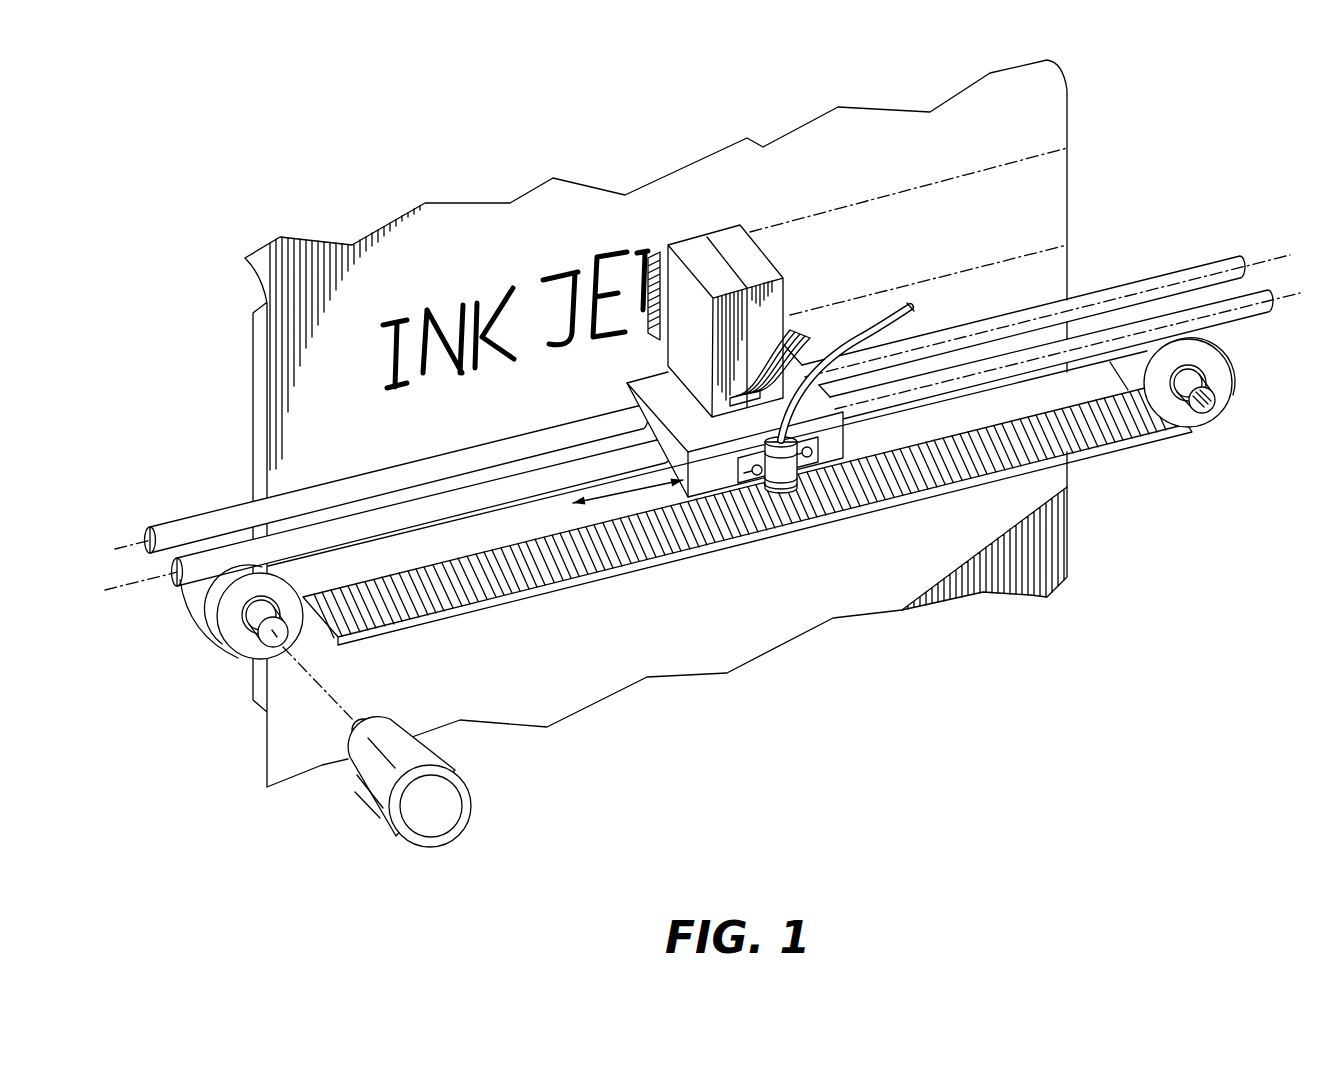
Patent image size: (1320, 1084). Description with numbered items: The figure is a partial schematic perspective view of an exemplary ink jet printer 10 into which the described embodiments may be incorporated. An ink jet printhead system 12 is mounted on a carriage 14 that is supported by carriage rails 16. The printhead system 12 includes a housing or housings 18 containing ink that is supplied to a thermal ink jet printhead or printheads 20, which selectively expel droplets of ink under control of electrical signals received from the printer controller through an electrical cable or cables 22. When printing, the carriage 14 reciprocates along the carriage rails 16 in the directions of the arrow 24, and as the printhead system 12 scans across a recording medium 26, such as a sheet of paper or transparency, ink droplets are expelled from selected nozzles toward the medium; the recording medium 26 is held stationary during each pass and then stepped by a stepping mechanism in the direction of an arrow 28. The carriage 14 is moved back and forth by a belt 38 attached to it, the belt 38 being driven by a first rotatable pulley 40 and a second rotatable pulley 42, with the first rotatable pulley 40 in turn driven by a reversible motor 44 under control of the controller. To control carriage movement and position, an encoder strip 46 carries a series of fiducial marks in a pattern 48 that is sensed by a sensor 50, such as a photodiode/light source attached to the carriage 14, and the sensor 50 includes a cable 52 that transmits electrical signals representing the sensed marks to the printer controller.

The ink jet printer 10 is at (328, 184).
The ink jet printhead system 12 is at (702, 252).
The carriage 14 is at (645, 383).
The carriage rails 16 is at (385, 513).
The housing 18 is at (693, 242).
The thermal ink jet printhead 20 is at (660, 243).
The electrical cable 22 is at (790, 347).
The arrow 24 is at (631, 490).
The recording medium 26 is at (445, 222).
The arrow 28 is at (1015, 247).
The belt 38 is at (193, 605).
The first rotatable pulley 40 is at (243, 647).
The second rotatable pulley 42 is at (1225, 382).
The reversible motor 44 is at (443, 810).
The encoder strip 46 is at (771, 498).
The pattern 48 is at (1078, 438).
The sensor 50 is at (792, 489).
The cable 52 is at (890, 317).